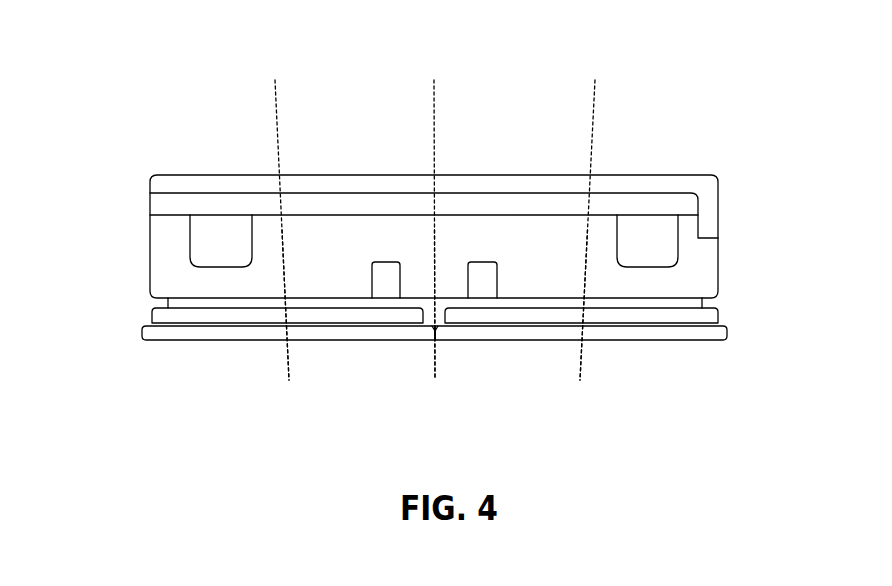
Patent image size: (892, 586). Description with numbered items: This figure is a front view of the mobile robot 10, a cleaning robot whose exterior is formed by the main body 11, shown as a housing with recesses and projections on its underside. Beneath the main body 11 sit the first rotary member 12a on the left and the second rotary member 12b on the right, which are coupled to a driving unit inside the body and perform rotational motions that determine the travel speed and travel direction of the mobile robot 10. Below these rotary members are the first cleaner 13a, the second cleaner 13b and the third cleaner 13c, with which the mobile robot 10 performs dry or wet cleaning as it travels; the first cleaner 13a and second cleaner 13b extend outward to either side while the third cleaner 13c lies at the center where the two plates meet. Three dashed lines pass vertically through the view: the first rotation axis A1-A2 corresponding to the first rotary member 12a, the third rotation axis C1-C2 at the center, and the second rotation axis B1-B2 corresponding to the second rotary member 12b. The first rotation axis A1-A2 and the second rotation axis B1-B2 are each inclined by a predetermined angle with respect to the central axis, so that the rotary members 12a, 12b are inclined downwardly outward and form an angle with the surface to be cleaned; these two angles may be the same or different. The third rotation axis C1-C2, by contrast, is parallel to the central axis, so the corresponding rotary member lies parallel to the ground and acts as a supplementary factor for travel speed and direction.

The mobile robot 10 is at (90, 32).
The main body 11 is at (648, 175).
The first rotary member 12a is at (150, 320).
The second rotary member 12b is at (718, 320).
The first cleaner 13a is at (198, 341).
The second cleaner 13b is at (672, 341).
The third cleaner 13c is at (387, 342).
The first rotation axis end point A1 is at (273, 216).
The first rotation axis end point A2 is at (290, 320).
The second rotation axis end point B1 is at (593, 216).
The second rotation axis end point B2 is at (581, 320).
The third rotation axis end point C1 is at (433, 215).
The third rotation axis end point C2 is at (433, 320).